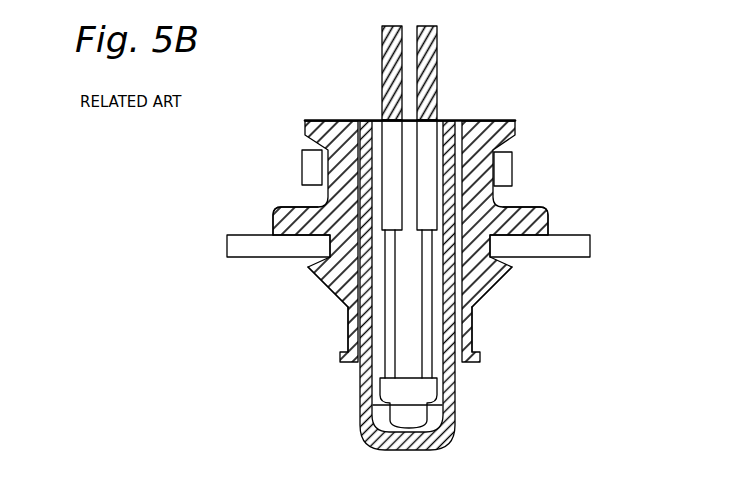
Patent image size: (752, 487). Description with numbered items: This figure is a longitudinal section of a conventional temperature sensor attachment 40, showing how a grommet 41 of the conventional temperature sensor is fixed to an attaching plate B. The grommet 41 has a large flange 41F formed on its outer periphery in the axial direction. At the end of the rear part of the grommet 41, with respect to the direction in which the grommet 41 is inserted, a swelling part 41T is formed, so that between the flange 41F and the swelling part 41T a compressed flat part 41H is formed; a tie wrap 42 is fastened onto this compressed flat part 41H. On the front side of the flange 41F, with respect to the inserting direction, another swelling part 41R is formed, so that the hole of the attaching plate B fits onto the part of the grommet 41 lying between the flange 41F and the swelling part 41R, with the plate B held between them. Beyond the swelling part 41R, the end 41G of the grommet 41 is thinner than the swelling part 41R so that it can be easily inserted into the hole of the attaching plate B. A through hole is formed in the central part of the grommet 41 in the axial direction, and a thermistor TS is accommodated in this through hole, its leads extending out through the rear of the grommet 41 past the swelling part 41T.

The connector (related art) 40 is at (523, 98).
The grommet 41 is at (515, 122).
The swelling part 41T is at (305, 124).
The compressed flat part 41H is at (320, 190).
The flange 41F is at (270, 207).
The swelling part 41R is at (317, 265).
The end 41G is at (347, 327).
The tie wrap 42 is at (503, 160).
The attaching plate B is at (577, 235).
The thermistor TS is at (440, 53).